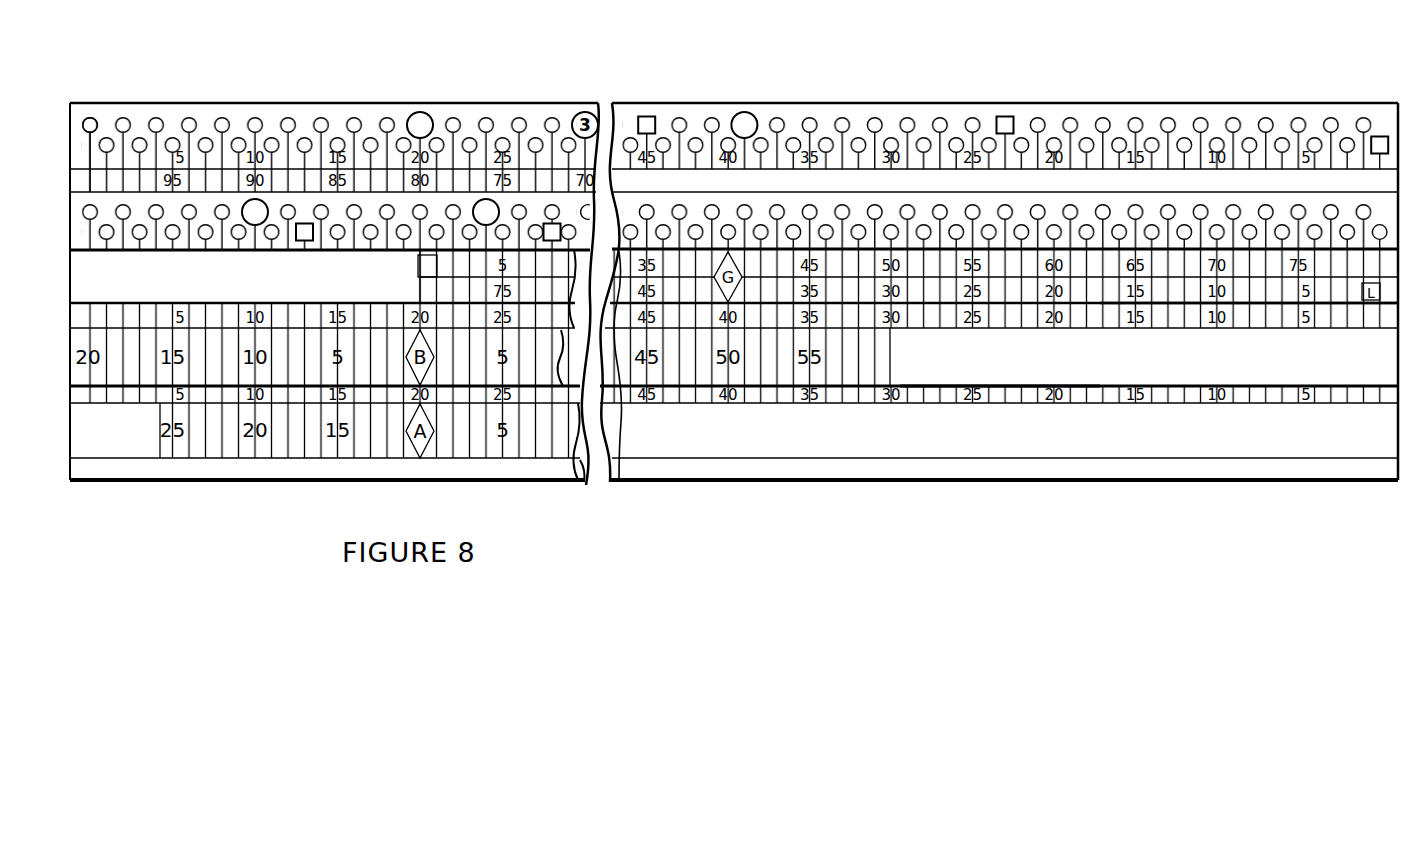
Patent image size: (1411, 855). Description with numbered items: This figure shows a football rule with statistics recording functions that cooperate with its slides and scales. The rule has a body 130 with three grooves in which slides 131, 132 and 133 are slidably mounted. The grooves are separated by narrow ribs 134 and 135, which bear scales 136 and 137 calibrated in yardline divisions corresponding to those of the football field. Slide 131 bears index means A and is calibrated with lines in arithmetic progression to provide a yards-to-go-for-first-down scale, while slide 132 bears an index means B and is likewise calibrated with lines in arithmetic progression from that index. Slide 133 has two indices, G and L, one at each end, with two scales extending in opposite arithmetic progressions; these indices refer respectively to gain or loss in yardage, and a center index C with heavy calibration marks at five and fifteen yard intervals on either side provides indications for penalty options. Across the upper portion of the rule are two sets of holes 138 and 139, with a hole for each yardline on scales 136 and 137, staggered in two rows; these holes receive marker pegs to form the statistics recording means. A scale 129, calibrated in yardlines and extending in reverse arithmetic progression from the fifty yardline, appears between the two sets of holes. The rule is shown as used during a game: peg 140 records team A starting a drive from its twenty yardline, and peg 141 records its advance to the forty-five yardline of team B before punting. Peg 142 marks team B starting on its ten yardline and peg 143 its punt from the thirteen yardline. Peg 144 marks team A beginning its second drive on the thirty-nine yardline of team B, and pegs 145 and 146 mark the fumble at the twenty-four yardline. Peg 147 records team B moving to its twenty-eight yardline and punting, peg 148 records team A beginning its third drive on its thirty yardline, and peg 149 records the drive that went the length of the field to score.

The scale 129 is at (1005, 179).
The body 130 is at (1004, 315).
The slide 131 is at (599, 488).
The slide 132 is at (919, 357).
The slide 133 is at (386, 271).
The rib 134 is at (1249, 334).
The rib 135 is at (999, 419).
The scale 136 is at (1001, 341).
The scale 137 is at (1000, 415).
The set of holes 138 is at (118, 126).
The set of holes 139 is at (285, 276).
The peg 140 is at (407, 90).
The peg 141 is at (666, 98).
The peg 142 is at (248, 143).
The peg 143 is at (325, 151).
The peg 144 is at (762, 99).
The peg 145 is at (1033, 84).
The peg 146 is at (474, 143).
The peg 147 is at (548, 151).
The peg 148 is at (600, 273).
The peg 149 is at (1378, 115).